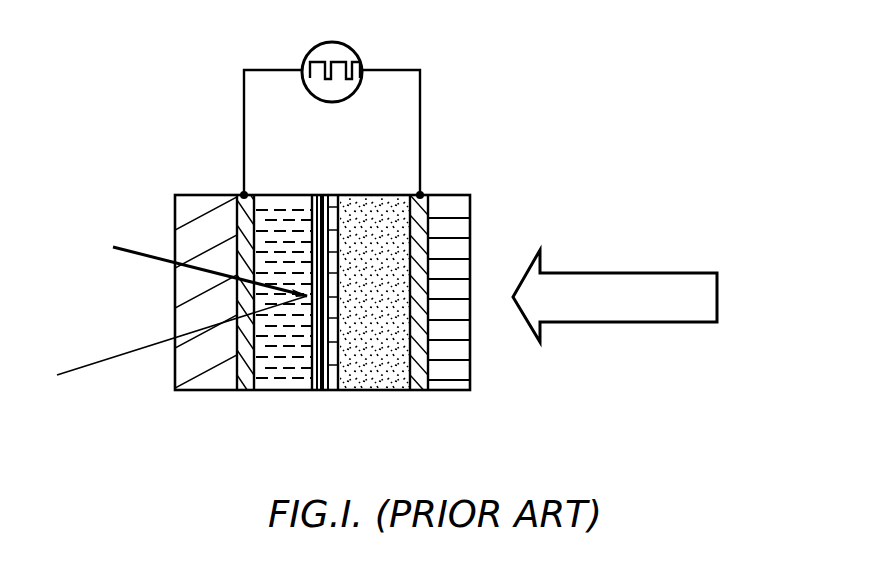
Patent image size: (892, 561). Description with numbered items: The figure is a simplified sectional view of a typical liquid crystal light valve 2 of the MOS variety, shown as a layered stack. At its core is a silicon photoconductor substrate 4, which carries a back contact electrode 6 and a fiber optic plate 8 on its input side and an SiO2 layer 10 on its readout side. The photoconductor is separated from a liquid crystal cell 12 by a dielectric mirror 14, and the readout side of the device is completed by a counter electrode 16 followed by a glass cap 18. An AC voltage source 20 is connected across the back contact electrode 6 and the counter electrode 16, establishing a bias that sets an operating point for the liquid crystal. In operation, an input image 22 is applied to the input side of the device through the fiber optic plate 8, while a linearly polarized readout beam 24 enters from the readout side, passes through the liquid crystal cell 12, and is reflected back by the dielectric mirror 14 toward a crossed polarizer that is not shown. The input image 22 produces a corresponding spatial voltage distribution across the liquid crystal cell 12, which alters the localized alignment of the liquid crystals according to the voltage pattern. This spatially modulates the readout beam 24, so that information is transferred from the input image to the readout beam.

The liquid crystal light valve 2 is at (488, 408).
The silicon photoconductor substrate 4 is at (386, 195).
The back contact electrode 6 is at (420, 193).
The fiber optic plate 8 is at (455, 195).
The SiO2 layer 10 is at (335, 195).
The liquid crystal cell 12 is at (282, 384).
The dielectric mirror 14 is at (323, 384).
The counter electrode 16 is at (241, 194).
The glass cap 18 is at (176, 203).
The AC voltage source 20 is at (351, 47).
The input image 22 is at (610, 273).
The readout beam 24 is at (97, 360).